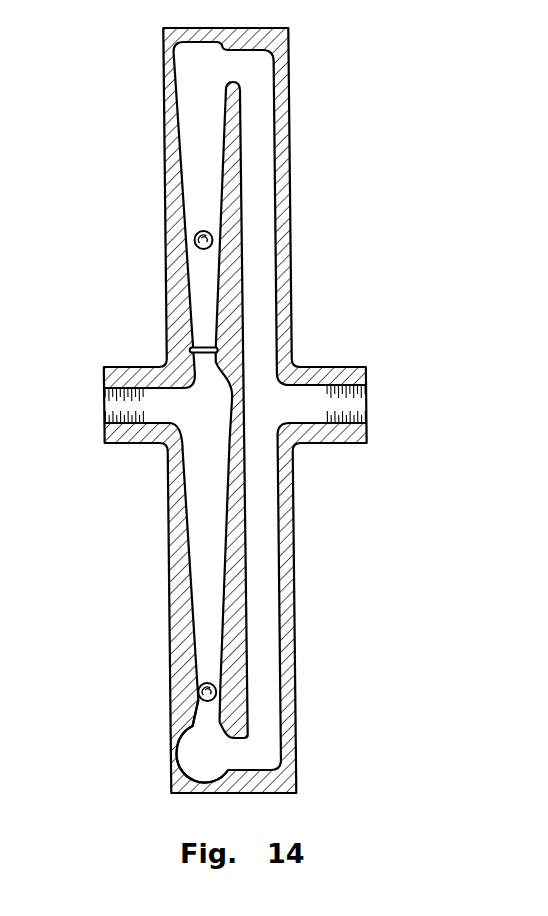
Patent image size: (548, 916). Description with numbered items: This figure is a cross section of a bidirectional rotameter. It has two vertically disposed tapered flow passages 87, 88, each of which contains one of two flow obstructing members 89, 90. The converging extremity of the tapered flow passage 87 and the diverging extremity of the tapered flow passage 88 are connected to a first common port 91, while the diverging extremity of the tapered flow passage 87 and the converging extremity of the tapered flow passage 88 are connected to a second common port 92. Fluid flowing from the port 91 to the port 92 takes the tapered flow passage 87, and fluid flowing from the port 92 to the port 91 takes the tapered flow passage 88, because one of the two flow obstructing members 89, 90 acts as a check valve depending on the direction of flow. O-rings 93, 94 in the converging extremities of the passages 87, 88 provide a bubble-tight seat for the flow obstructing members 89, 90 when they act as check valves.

The tapered flow passage 87 is at (195, 178).
The tapered flow passage 88 is at (205, 602).
The flow obstructing member 89 is at (193, 243).
The flow obstructing member 90 is at (210, 684).
The first common port 91 is at (110, 406).
The second common port 92 is at (344, 401).
The O-ring 93 is at (199, 348).
The O-ring 94 is at (193, 720).